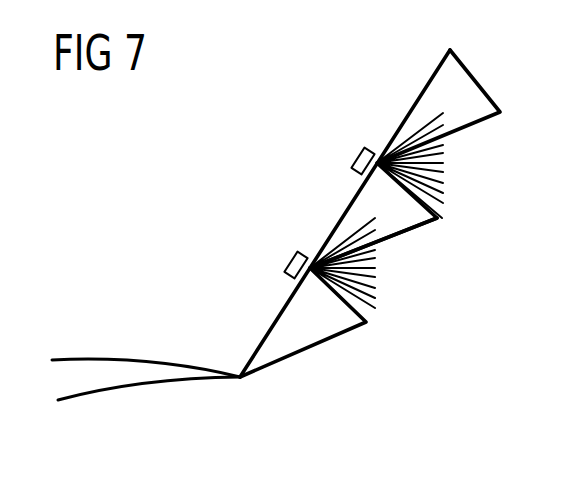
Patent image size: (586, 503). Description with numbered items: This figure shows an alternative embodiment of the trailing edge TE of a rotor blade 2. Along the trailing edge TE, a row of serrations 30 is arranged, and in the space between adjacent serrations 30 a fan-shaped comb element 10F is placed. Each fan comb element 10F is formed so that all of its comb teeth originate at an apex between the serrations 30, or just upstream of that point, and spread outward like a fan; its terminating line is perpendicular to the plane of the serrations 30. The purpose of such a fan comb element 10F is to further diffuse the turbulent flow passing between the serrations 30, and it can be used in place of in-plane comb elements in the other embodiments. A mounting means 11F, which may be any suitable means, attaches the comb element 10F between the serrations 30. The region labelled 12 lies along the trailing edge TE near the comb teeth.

The rotor blade 2 is at (141, 403).
The serrations 30 is at (468, 102).
The fan-shaped comb element 10F is at (430, 172).
The mounting means 11F is at (358, 157).
The attachment region 12 is at (352, 233).
The trailing edge TE is at (408, 107).